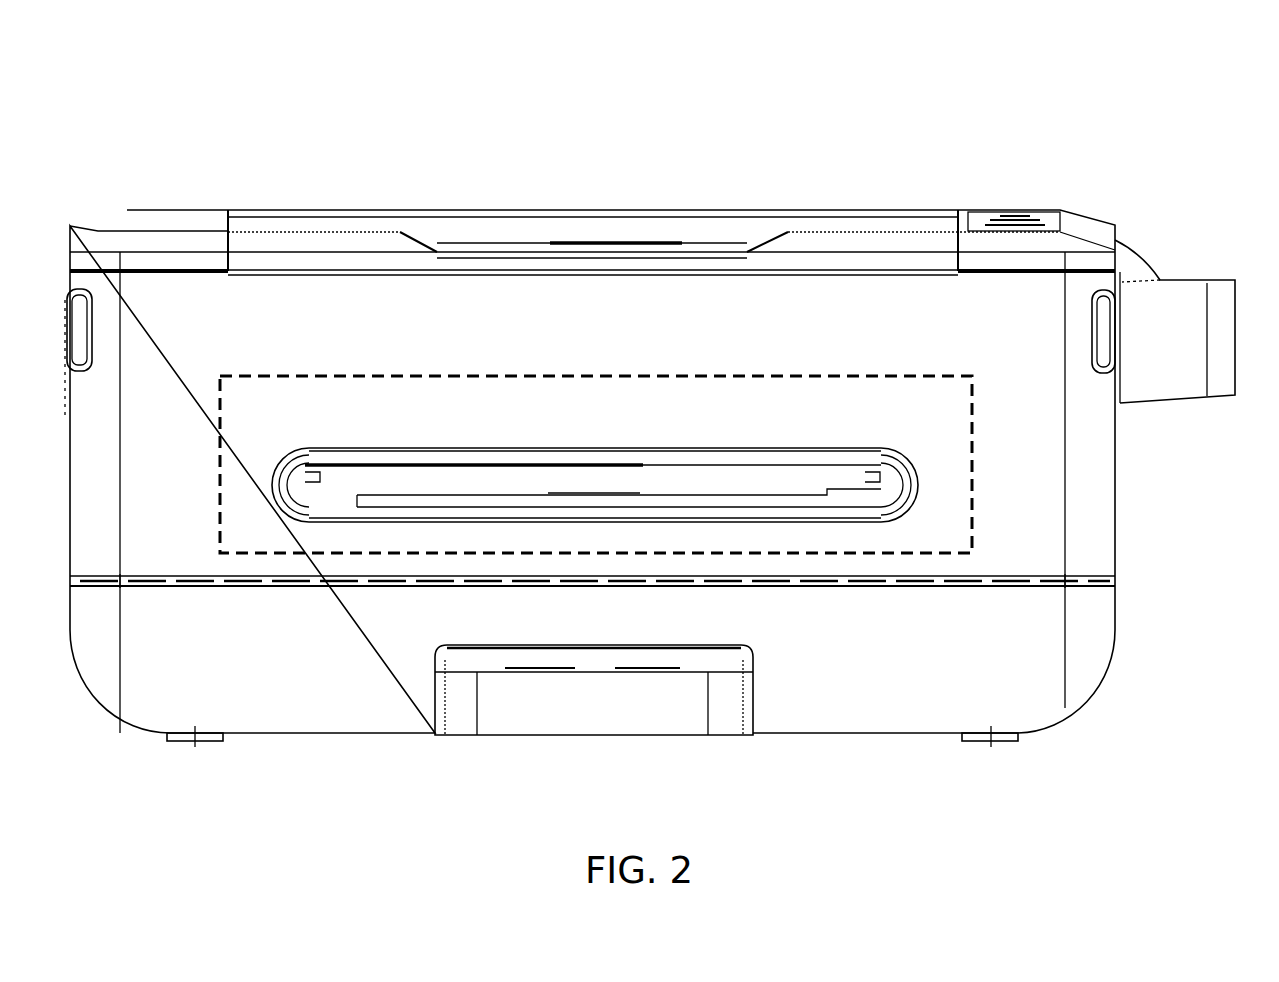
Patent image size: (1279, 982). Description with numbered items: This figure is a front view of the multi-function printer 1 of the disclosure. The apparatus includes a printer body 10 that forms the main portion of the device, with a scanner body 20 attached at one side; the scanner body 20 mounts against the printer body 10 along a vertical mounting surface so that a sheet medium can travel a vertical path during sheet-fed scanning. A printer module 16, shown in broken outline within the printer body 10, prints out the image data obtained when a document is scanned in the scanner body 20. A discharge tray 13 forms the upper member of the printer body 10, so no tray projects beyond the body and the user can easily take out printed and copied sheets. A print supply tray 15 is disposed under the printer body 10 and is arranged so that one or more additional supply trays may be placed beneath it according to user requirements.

The multi-function printer 1 is at (1070, 67).
The printer body 10 is at (740, 185).
The discharge tray 13 is at (340, 222).
The print supply tray 15 is at (395, 719).
The printer module 16 is at (478, 376).
The scanner body 20 is at (1163, 245).